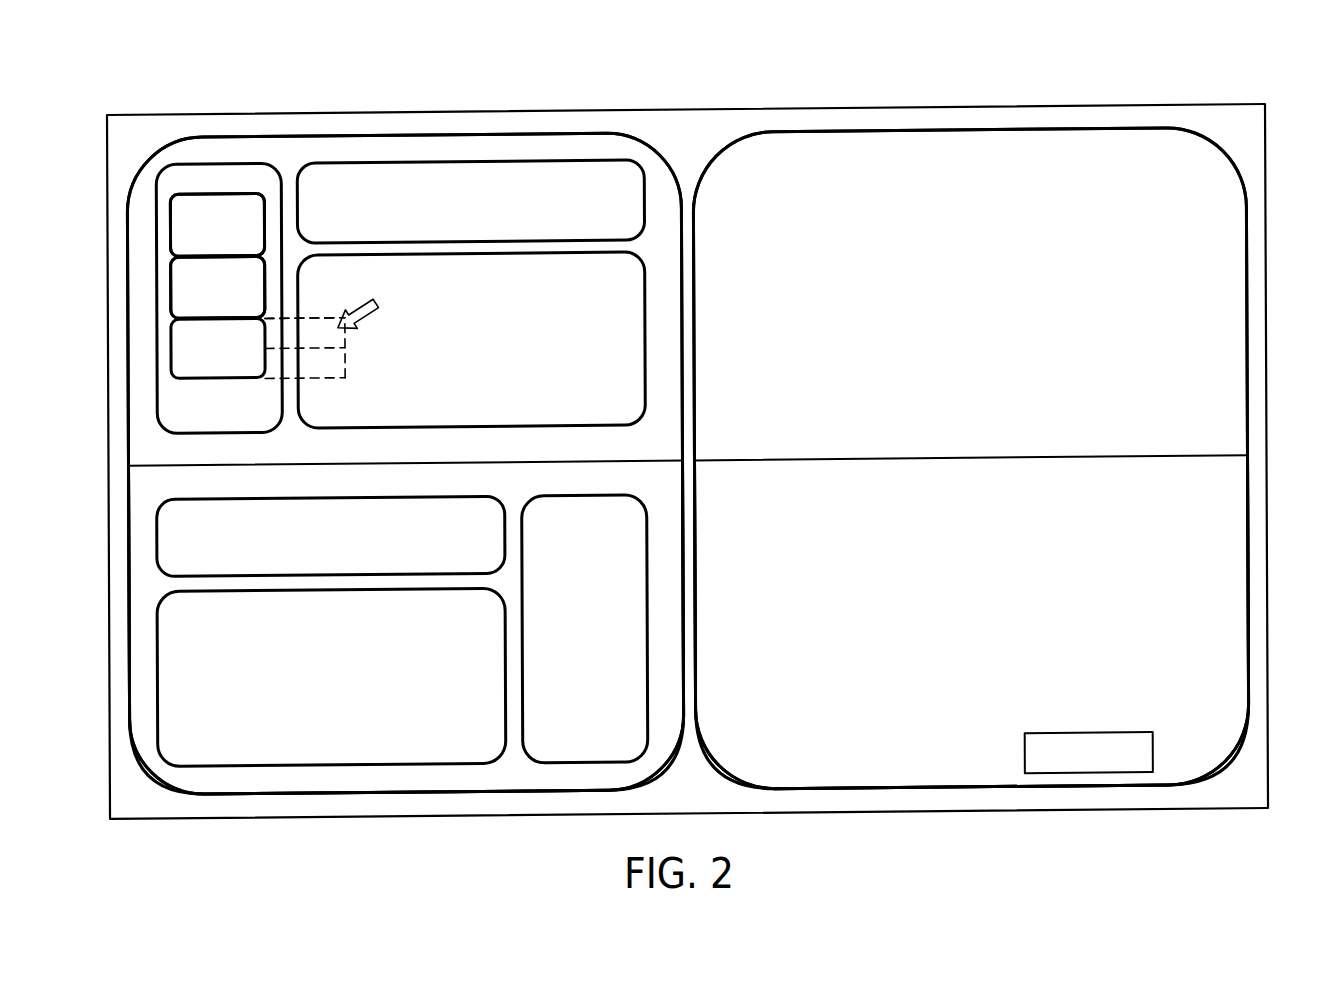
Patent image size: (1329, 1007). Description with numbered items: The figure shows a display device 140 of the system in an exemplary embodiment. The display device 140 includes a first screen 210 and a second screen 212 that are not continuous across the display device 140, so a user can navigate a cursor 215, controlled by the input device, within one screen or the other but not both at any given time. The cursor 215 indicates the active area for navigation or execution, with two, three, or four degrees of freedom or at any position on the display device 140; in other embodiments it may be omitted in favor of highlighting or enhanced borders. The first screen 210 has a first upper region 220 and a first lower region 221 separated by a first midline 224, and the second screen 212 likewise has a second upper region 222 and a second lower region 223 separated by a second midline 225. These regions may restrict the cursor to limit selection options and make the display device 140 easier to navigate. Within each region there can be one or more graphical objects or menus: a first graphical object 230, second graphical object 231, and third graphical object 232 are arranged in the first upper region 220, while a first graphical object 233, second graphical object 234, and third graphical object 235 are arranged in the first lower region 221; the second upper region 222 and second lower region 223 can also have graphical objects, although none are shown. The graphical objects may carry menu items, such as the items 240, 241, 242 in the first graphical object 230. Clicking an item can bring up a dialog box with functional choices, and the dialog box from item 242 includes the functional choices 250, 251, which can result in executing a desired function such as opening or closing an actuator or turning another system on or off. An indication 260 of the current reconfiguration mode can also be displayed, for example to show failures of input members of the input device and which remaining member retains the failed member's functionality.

The display device 140 is at (687, 416).
The first screen 210 is at (405, 426).
The second screen 212 is at (971, 420).
The cursor 215 is at (377, 304).
The first upper region 220 is at (126, 256).
The first lower region 221 is at (126, 587).
The second upper region 222 is at (1234, 284).
The second lower region 223 is at (1236, 549).
The first midline 224 is at (565, 466).
The second midline 225 is at (1051, 467).
The first graphical object 230 is at (222, 250).
The second graphical object 231 is at (644, 195).
The third graphical object 232 is at (644, 302).
The first graphical object 233 is at (155, 529).
The second graphical object 234 is at (645, 572).
The third graphical object 235 is at (154, 666).
The menu item 240 is at (184, 196).
The menu item 241 is at (206, 258).
The menu item 242 is at (206, 319).
The functional choice 250 is at (322, 319).
The functional choice 251 is at (322, 383).
The reconfiguration mode indication 260 is at (1085, 743).